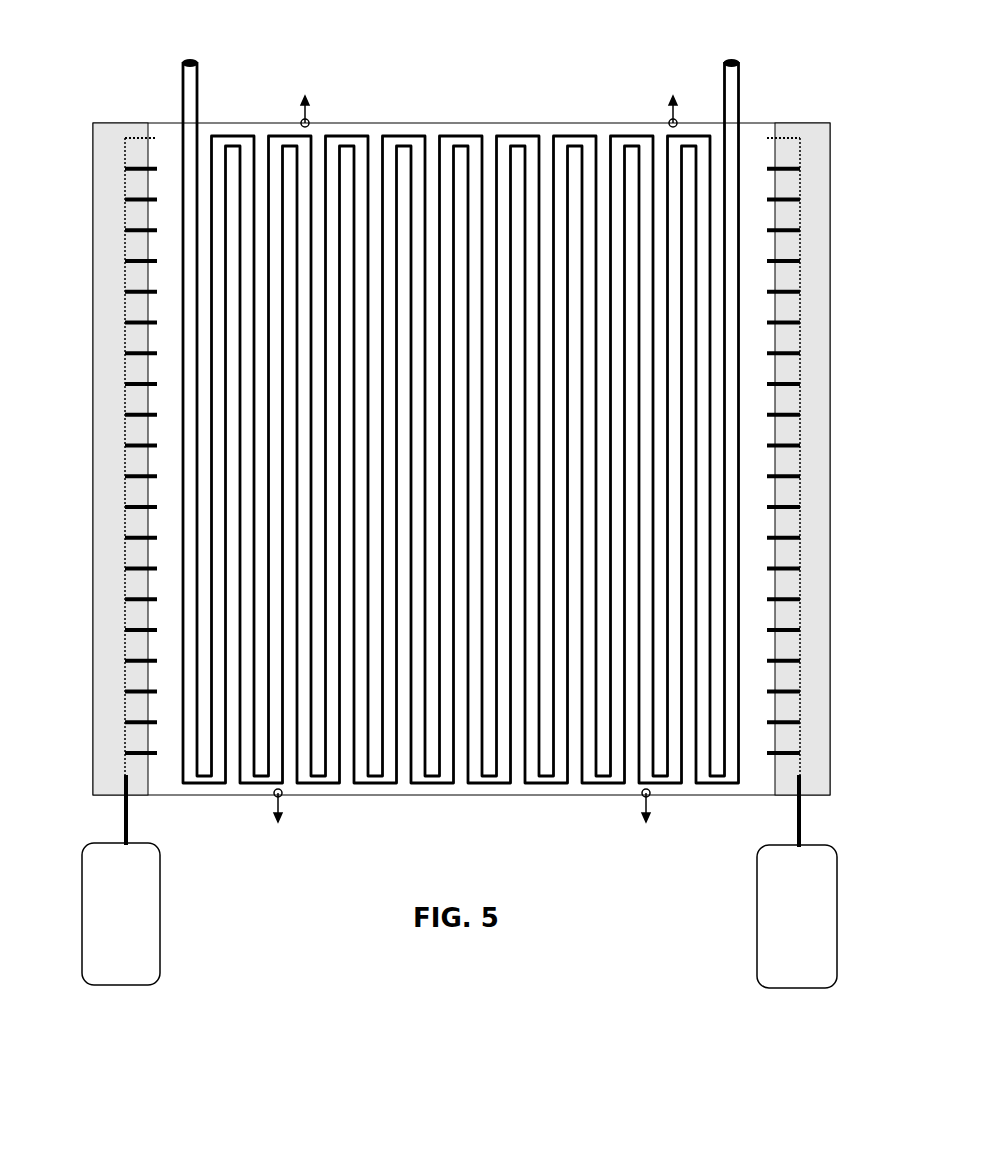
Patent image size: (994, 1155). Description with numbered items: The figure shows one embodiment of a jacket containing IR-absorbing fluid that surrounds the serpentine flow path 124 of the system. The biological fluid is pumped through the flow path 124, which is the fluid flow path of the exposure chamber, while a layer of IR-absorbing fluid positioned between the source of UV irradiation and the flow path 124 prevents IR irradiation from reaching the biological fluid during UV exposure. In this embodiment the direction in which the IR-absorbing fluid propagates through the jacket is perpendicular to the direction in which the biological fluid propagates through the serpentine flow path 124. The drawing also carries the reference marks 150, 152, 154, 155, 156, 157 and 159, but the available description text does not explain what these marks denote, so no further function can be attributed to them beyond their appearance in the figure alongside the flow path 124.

The heat exchanger assembly 150 is at (122, 123).
The air flow arrow 152 is at (310, 121).
The fluid flow path 124 is at (412, 138).
The left fins 155 is at (157, 755).
The left lead 154 is at (127, 826).
The right fins 157 is at (767, 753).
The right lead 156 is at (797, 803).
The terminal box 159 is at (141, 948).